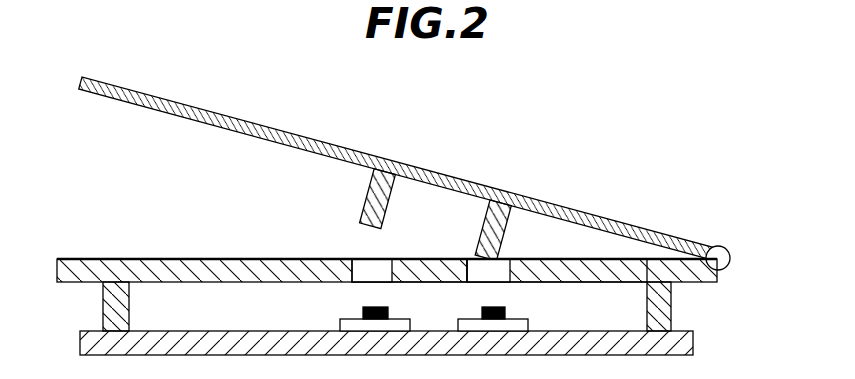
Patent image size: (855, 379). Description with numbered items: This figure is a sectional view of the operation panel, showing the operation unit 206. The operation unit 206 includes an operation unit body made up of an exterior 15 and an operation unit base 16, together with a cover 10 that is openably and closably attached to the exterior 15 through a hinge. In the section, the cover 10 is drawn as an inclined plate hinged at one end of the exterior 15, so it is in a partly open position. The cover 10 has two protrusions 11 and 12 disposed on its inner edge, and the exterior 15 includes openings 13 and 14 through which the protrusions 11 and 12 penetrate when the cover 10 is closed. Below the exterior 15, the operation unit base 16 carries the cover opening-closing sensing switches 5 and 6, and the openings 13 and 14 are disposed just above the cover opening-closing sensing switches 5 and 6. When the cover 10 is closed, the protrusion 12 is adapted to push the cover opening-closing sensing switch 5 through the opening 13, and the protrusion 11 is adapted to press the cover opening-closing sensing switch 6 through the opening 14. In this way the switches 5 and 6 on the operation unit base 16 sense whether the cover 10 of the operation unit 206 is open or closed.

The operation unit 206 is at (424, 119).
The cover 10 is at (227, 116).
The protrusion 11 is at (367, 202).
The protrusion 12 is at (487, 227).
The opening 13 is at (512, 272).
The opening 14 is at (398, 270).
The exterior 15 is at (198, 259).
The operation unit base 16 is at (693, 343).
The cover opening-closing sensing switch 6 is at (410, 323).
The cover opening-closing sensing switch 5 is at (528, 323).